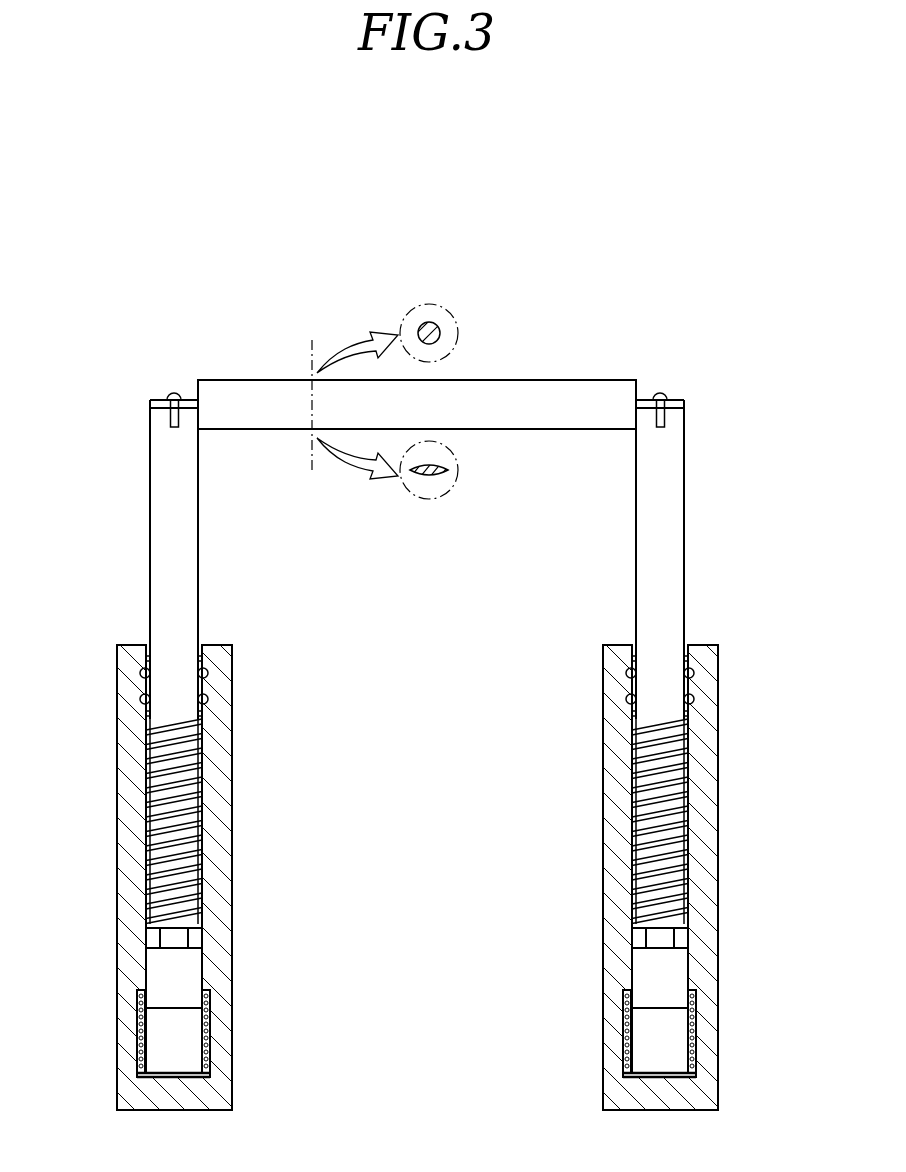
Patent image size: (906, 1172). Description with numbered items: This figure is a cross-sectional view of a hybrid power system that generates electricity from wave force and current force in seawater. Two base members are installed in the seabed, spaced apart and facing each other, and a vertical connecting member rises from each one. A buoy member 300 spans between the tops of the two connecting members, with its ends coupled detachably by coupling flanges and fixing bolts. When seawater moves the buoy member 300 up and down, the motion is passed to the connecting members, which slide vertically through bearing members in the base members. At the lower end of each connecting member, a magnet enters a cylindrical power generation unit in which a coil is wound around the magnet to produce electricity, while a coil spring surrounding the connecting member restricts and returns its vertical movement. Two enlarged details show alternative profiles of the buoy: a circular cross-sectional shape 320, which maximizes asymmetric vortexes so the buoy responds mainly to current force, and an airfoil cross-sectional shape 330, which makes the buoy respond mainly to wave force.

The buoy member 300 is at (577, 380).
The circular cross-sectional shape 320 is at (437, 323).
The airfoil cross-sectional shape 330 is at (431, 478).